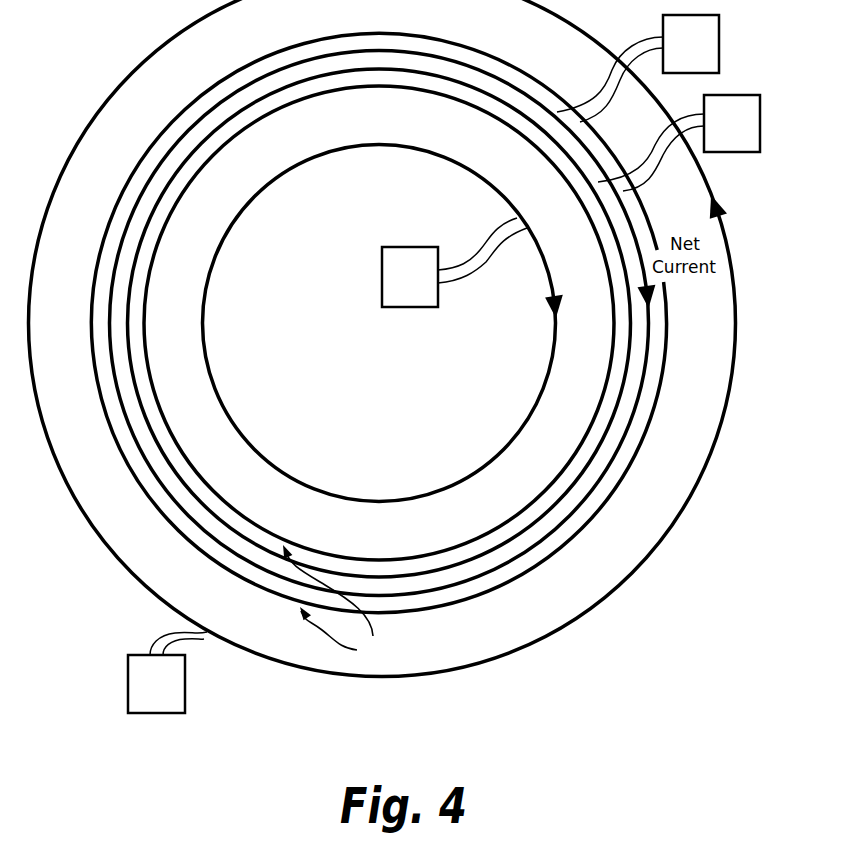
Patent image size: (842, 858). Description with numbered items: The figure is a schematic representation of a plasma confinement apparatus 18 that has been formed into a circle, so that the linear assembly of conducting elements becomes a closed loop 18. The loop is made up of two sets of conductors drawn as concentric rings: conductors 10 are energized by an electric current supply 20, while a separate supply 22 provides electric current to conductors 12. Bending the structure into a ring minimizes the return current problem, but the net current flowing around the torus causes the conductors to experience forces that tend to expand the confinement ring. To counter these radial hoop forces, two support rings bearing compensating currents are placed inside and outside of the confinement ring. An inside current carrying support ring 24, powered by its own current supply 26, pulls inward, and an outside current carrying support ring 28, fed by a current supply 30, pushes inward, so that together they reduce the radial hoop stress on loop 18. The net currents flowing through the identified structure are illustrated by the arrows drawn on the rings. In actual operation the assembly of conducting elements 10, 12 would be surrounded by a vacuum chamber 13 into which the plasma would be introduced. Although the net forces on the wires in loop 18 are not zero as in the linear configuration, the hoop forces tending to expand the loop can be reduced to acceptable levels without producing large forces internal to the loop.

The conductors 10 is at (580, 127).
The conductors 12 is at (541, 141).
The vacuum chamber 13 is at (344, 609).
The plasma confinement apparatus 18 is at (643, 403).
The electric current supply 20 is at (638, 68).
The current supply 22 is at (679, 143).
The inside current carrying support ring 24 is at (528, 425).
The current supply 26 is at (454, 262).
The outside current carrying support ring 28 is at (667, 533).
The current supply 30 is at (167, 672).